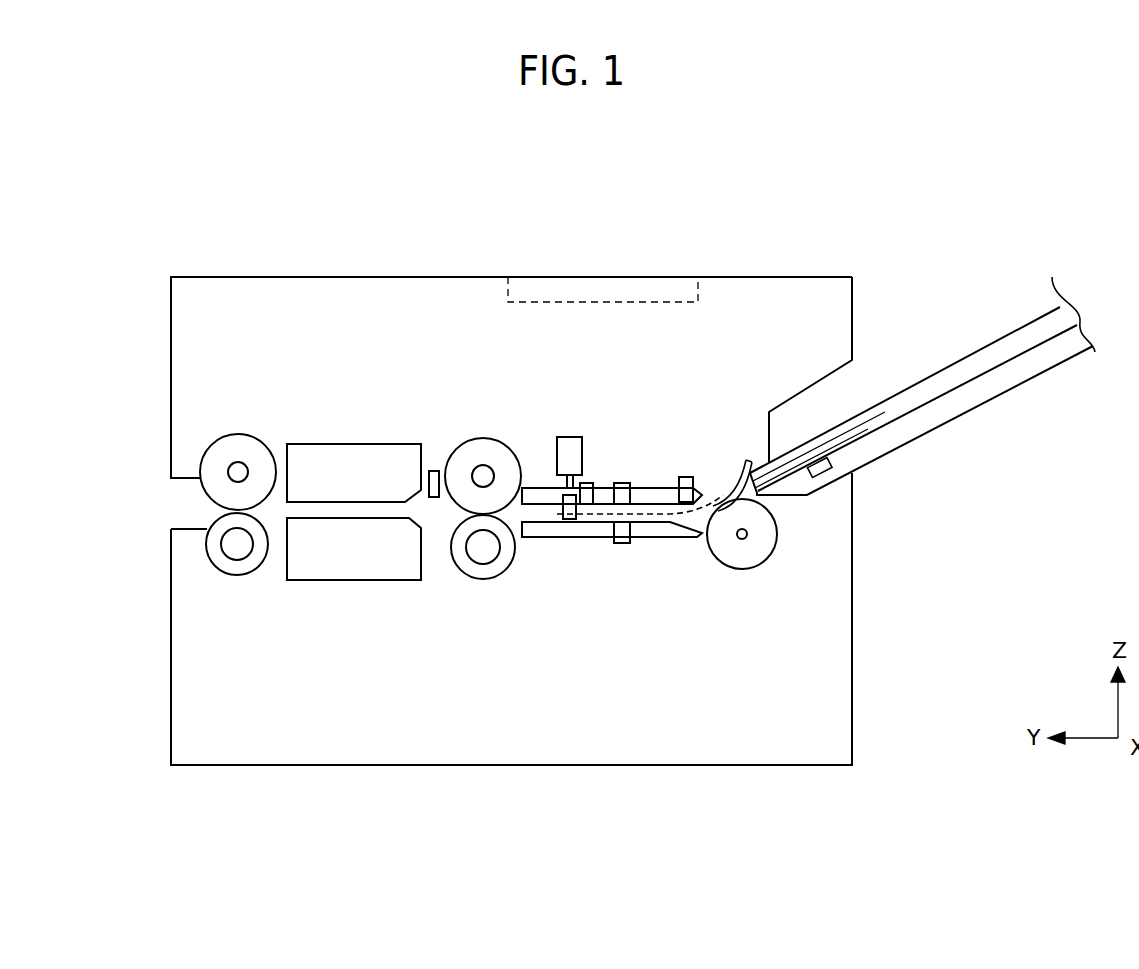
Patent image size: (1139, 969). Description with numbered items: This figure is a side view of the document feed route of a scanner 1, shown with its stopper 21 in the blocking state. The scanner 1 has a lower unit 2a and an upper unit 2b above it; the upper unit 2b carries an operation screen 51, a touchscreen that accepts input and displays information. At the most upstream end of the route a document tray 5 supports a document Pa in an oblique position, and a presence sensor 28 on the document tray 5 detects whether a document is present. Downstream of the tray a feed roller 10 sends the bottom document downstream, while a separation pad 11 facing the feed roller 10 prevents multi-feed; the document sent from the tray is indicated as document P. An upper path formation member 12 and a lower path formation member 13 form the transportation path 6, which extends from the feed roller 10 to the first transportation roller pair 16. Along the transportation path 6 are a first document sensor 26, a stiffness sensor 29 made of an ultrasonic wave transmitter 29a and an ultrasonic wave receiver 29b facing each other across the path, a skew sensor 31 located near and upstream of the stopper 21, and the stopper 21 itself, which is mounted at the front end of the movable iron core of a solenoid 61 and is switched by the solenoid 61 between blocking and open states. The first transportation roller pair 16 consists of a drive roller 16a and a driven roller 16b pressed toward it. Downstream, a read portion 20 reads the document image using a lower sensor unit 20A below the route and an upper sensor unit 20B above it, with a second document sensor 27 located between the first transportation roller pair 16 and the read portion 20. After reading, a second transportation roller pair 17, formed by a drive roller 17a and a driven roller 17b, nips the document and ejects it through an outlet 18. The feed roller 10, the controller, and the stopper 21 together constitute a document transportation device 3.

The scanner 1 is at (483, 195).
The lower unit 2a is at (853, 628).
The upper unit 2b is at (853, 310).
The document transportation device 3 is at (618, 517).
The document tray 5 is at (922, 400).
The transportation path 6 is at (588, 516).
The feed roller 10 is at (763, 567).
The separation pad 11 is at (737, 478).
The upper path formation member 12 is at (540, 488).
The lower path formation member 13 is at (538, 538).
The first transportation roller pair 16 is at (493, 488).
The drive roller 16a is at (473, 580).
The driven roller 16b is at (507, 437).
The second transportation roller pair 17 is at (250, 489).
The drive roller 17a is at (237, 577).
The driven roller 17b is at (262, 437).
The outlet 18 is at (133, 500).
The read portion 20 is at (354, 471).
The lower sensor unit 20A is at (363, 582).
The upper sensor unit 20B is at (355, 445).
The stopper 21 is at (562, 520).
The first document sensor 26 is at (686, 477).
The second document sensor 27 is at (435, 470).
The presence sensor 28 is at (825, 473).
The stiffness sensor 29 is at (655, 527).
The ultrasonic wave transmitter 29a is at (632, 545).
The ultrasonic wave receiver 29b is at (625, 483).
The skew sensor 31 is at (587, 483).
The operation screen 51 is at (622, 288).
The solenoid 61 is at (568, 437).
The document P is at (660, 512).
The document Pa is at (953, 372).